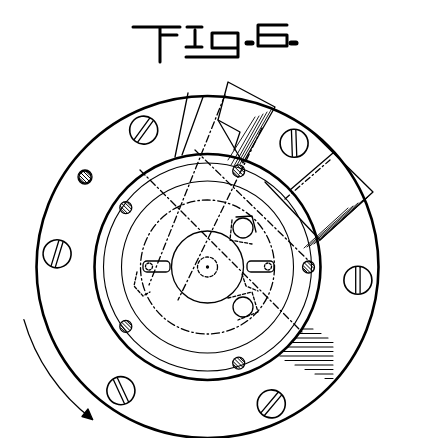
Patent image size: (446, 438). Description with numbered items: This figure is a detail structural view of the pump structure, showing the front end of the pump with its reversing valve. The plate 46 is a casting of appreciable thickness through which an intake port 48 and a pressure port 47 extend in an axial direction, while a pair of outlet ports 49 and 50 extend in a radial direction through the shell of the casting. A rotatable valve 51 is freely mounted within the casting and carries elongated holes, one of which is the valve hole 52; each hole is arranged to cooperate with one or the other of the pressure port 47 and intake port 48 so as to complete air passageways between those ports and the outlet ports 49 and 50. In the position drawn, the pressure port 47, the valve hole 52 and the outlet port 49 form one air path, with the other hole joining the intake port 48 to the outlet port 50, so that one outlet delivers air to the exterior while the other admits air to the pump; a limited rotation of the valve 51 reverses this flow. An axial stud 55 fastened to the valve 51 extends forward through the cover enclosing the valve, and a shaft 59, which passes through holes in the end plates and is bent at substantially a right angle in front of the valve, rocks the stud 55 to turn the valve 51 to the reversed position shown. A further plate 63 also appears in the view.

The plate 46 is at (203, 104).
The pressure port 47 is at (234, 315).
The intake port 48 is at (236, 222).
The outlet port 49 is at (143, 266).
The outlet port 50 is at (257, 284).
The rotatable valve 51 is at (122, 287).
The valve hole 52 is at (192, 317).
The axial stud 55 is at (215, 247).
The shaft 59 is at (82, 171).
The plate 63 is at (178, 208).